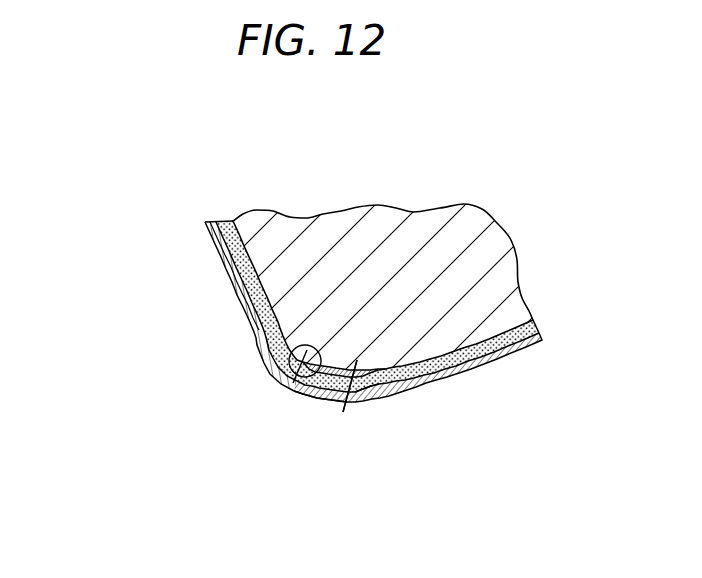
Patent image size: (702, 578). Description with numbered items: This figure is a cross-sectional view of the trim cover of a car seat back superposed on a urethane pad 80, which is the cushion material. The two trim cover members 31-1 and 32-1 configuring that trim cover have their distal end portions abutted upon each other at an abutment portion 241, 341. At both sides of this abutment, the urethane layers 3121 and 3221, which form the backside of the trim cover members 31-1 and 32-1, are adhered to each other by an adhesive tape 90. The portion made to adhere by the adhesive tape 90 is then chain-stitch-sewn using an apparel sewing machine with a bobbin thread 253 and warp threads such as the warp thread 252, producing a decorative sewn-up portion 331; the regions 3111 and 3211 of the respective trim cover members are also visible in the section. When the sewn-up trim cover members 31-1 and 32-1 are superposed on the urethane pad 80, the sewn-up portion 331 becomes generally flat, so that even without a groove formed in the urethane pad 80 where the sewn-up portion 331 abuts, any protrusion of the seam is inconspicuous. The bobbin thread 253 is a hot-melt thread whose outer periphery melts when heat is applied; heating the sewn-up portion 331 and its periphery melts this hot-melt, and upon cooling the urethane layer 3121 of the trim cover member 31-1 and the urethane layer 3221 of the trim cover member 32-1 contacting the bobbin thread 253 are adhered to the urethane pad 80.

The urethane pad 80 is at (494, 247).
The adhesive tape 90 is at (338, 367).
The trim cover member 31-1 is at (425, 401).
The first resin layer 3111 is at (455, 375).
The urethane layer 3121 is at (512, 354).
The trim cover member 32-1 is at (181, 306).
The second resin layer 3211 is at (260, 306).
The urethane layer 3221 is at (253, 327).
The abutment portion 241 is at (333, 404).
The abutment portion 341 is at (327, 435).
The warp thread 252 is at (365, 401).
The bobbin thread 253 is at (295, 357).
The sewn-up portion 331 is at (351, 415).